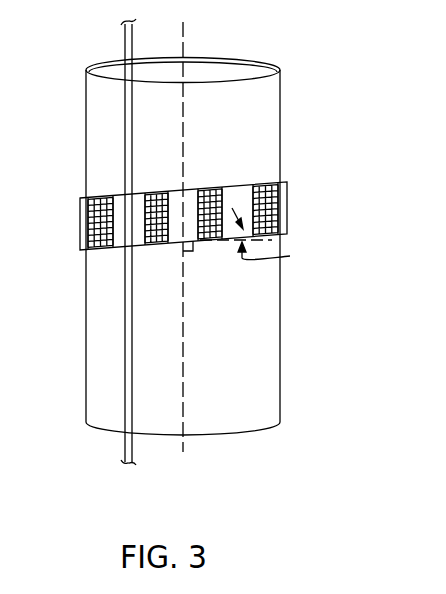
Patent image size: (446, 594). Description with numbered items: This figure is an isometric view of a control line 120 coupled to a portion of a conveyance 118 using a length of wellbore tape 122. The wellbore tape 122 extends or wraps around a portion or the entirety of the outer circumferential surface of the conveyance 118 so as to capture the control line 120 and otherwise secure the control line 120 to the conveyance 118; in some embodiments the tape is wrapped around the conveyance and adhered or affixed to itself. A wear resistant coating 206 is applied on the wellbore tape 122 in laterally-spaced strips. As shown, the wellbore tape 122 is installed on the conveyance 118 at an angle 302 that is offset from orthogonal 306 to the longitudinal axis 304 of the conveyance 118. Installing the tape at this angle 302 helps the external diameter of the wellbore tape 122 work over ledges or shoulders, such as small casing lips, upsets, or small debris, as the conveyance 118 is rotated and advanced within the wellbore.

The conveyance 118 is at (281, 108).
The control line 120 is at (124, 33).
The wellbore tape 122 is at (288, 207).
The wear resistant coating 206 is at (266, 183).
The angle 302 is at (290, 256).
The longitudinal axis 304 is at (184, 24).
The orthogonal 306 is at (212, 241).